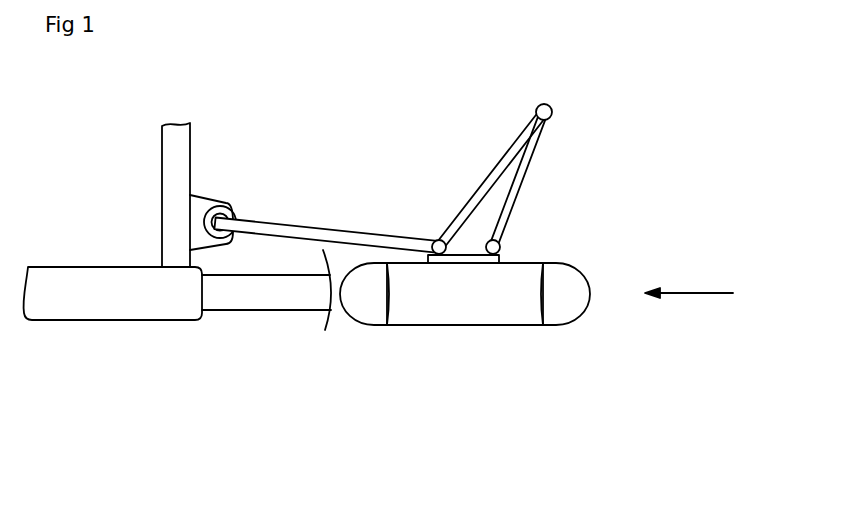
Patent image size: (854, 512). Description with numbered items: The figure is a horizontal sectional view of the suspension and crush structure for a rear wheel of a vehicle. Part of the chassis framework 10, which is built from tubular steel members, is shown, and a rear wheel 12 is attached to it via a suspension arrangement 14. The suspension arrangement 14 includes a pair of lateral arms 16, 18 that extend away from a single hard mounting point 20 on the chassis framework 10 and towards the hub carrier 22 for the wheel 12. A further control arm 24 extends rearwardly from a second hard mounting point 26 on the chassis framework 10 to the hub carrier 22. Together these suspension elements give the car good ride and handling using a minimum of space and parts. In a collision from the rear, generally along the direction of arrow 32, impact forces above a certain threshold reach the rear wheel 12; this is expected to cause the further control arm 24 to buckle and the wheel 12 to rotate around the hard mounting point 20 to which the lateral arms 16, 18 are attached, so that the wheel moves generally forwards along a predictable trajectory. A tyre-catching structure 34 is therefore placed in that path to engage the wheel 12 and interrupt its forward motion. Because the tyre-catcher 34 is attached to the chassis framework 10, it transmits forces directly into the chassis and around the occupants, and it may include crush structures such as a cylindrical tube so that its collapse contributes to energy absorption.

The chassis framework 10 is at (127, 323).
The rear wheel 12 is at (422, 326).
The suspension arrangement 14 is at (539, 163).
The lateral arm 16 is at (472, 197).
The lateral arm 18 is at (518, 193).
The hard mounting point 20 is at (553, 110).
The hub carrier 22 is at (500, 260).
The further control arm 24 is at (310, 227).
The second hard mounting point 26 is at (227, 207).
The arrow 32 is at (689, 280).
The tyre-catching structure 34 is at (267, 311).